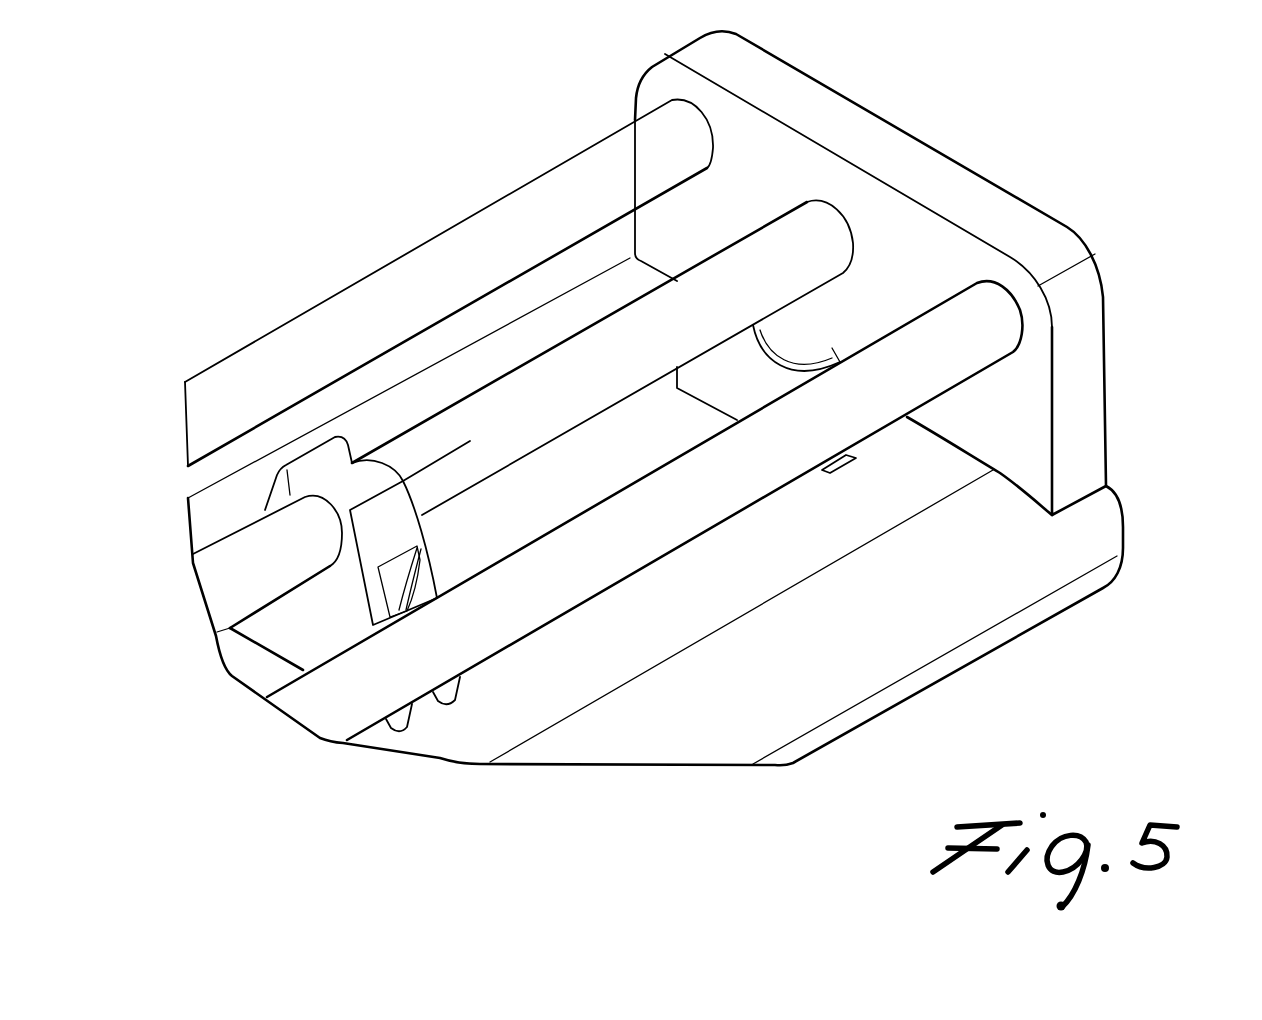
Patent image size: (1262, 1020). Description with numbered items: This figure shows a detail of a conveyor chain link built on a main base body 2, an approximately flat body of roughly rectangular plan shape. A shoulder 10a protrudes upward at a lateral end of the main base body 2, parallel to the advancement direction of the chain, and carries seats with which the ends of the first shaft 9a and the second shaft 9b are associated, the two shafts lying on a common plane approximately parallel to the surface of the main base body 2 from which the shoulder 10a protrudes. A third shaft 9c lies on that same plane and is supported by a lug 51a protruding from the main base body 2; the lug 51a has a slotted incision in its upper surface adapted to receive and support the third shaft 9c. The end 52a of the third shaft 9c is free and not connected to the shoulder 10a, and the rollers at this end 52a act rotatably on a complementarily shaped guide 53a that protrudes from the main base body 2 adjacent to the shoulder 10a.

The main base body 2 is at (1098, 590).
The first shaft 9a is at (943, 367).
The second shaft 9b is at (493, 250).
The third shaft 9c is at (256, 570).
The shoulder 10a is at (1095, 259).
The lug 51a is at (432, 543).
The end of the third shaft 52a is at (848, 219).
The guide 53a is at (848, 463).